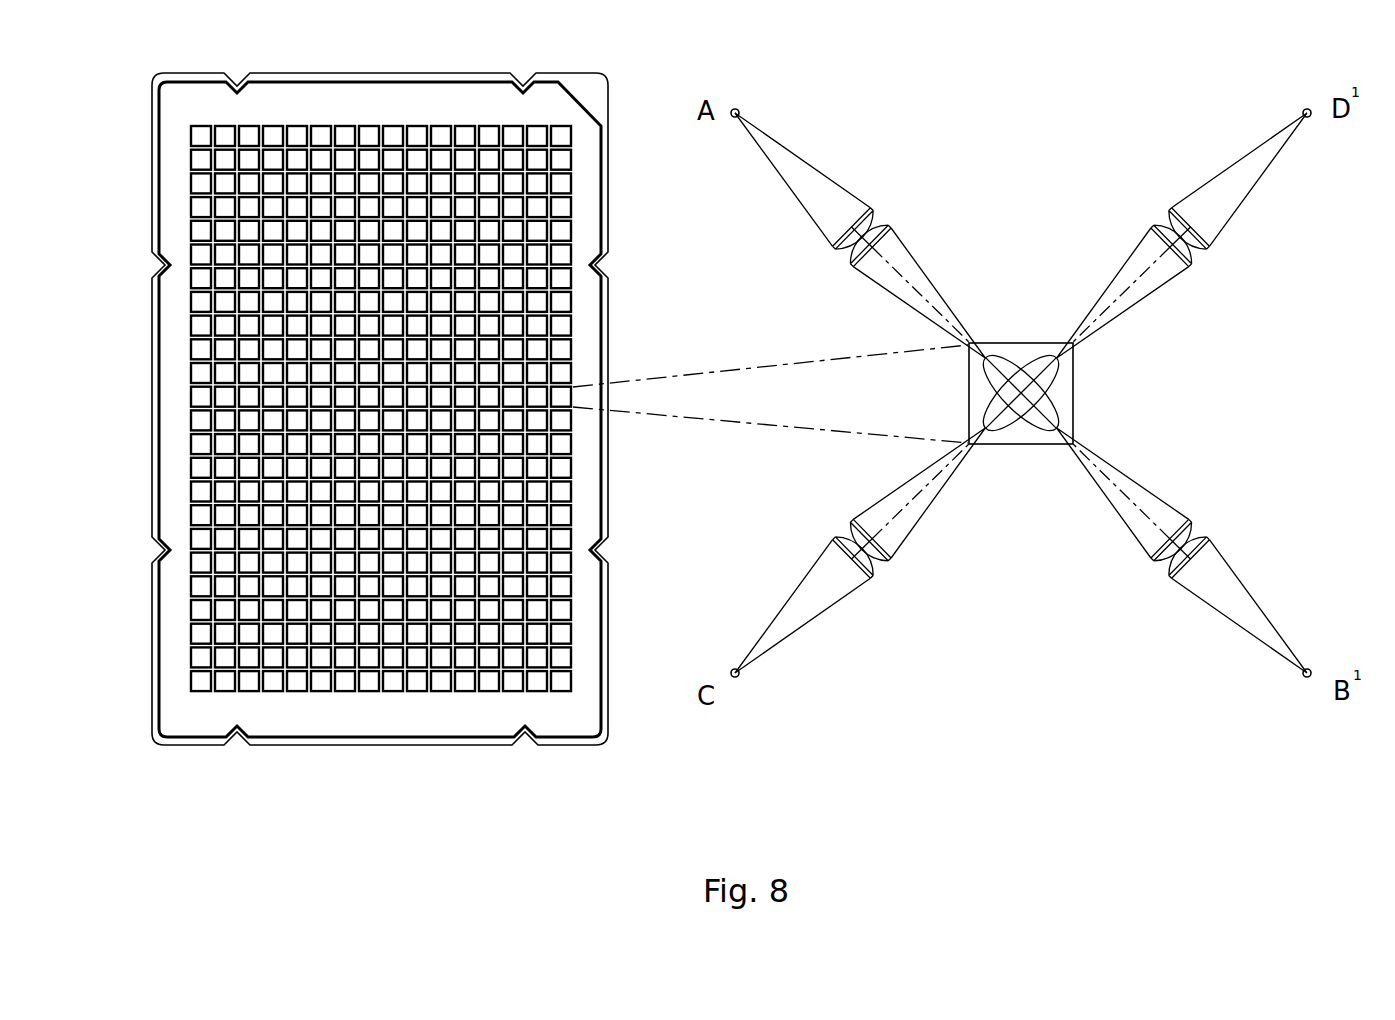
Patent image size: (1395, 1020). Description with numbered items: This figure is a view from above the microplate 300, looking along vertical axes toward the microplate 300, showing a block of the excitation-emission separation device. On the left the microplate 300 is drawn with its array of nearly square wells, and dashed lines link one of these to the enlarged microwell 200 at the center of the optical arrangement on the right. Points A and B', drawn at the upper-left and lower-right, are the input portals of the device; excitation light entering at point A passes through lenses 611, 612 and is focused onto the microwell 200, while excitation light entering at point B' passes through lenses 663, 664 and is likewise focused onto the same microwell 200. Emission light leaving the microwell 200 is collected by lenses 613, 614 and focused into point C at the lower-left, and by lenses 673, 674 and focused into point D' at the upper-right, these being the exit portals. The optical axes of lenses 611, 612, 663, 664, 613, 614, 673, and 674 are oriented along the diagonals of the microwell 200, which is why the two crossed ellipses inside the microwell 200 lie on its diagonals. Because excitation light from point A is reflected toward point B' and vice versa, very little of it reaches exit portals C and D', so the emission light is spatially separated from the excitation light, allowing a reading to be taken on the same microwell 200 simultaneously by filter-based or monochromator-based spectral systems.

The microplate 300 is at (608, 75).
The microwell 200 is at (1035, 343).
The lens 611 is at (832, 249).
The lens 612 is at (852, 267).
The lens 613 is at (832, 539).
The lens 614 is at (853, 519).
The lens 663 is at (1188, 519).
The lens 664 is at (1209, 539).
The lens 673 is at (1188, 268).
The lens 674 is at (1209, 248).